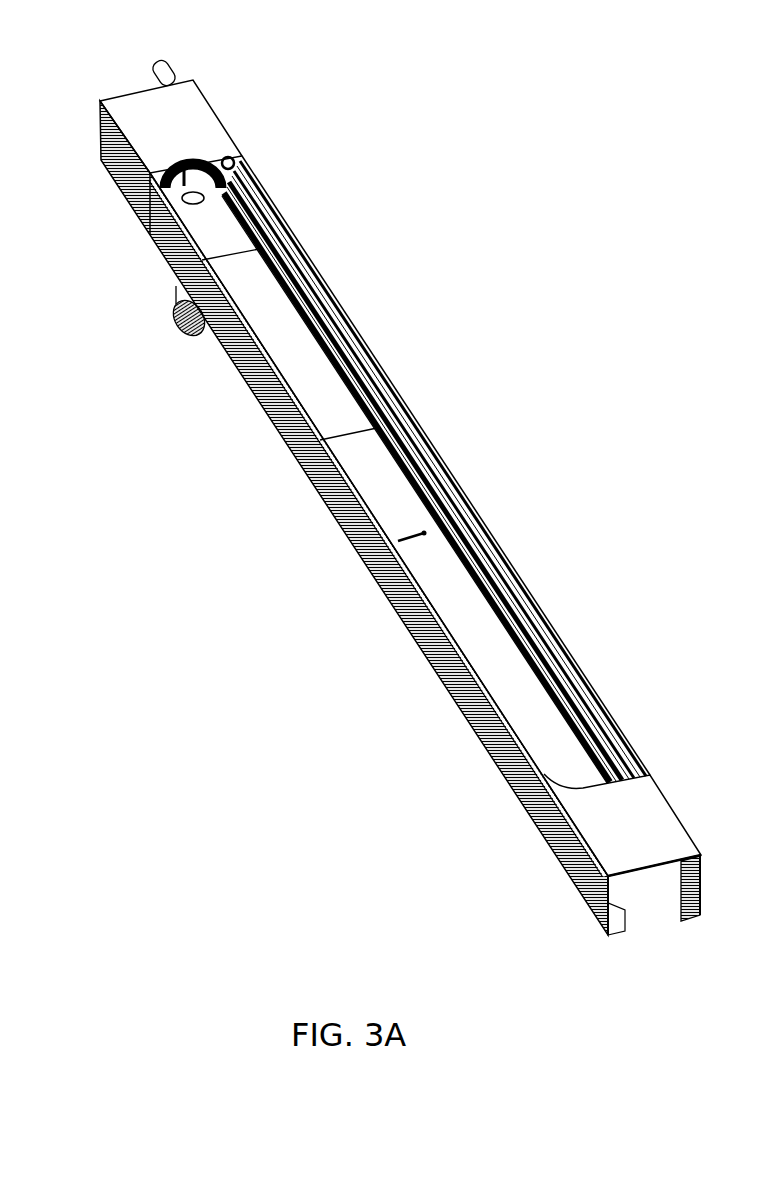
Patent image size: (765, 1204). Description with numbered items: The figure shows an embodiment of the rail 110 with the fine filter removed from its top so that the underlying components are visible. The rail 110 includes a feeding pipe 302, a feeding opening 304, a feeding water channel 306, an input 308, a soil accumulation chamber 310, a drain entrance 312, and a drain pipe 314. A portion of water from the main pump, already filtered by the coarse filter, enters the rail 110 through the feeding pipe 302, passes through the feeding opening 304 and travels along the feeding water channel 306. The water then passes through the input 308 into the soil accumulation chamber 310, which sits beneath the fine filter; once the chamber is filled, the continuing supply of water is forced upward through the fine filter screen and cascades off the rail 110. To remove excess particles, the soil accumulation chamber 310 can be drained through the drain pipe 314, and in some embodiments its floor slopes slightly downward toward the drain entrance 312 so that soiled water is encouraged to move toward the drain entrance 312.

The rail 110 is at (560, 74).
The feeding pipe 302 is at (183, 45).
The feeding opening 304 is at (255, 164).
The feeding water channel 306 is at (443, 449).
The input 308 is at (568, 743).
The soil accumulation chamber 310 is at (284, 374).
The drain entrance 312 is at (154, 190).
The drain pipe 314 is at (150, 317).